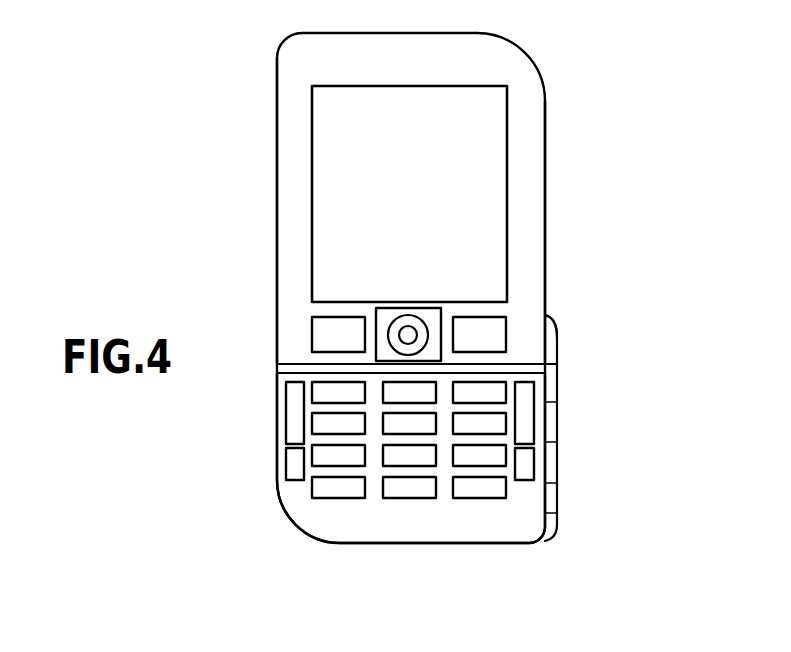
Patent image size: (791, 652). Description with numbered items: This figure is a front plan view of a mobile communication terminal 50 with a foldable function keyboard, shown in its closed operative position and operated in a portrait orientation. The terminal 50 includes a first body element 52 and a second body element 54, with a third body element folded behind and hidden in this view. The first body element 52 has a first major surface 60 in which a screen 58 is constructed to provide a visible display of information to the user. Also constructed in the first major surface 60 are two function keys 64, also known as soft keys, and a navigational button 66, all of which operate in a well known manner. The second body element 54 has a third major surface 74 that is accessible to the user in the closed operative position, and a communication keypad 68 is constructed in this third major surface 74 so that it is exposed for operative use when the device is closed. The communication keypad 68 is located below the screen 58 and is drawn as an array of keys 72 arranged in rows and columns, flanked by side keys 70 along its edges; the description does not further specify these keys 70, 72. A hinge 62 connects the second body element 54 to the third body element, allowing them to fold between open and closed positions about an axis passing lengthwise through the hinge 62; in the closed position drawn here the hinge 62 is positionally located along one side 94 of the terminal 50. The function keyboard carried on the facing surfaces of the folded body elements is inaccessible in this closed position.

The mobile communication terminal 50 is at (568, 98).
The first body element 52 is at (535, 173).
The second body element 54 is at (530, 527).
The screen 58 is at (467, 93).
The first major surface 60 is at (288, 95).
The hinge 62 is at (550, 378).
The function keys 64 is at (320, 337).
The navigational button 66 is at (409, 333).
The communication keypad 68 is at (421, 481).
The side keys 70 is at (313, 457).
The keys 72 is at (395, 490).
The third major surface 74 is at (482, 510).
The side 94 is at (548, 309).